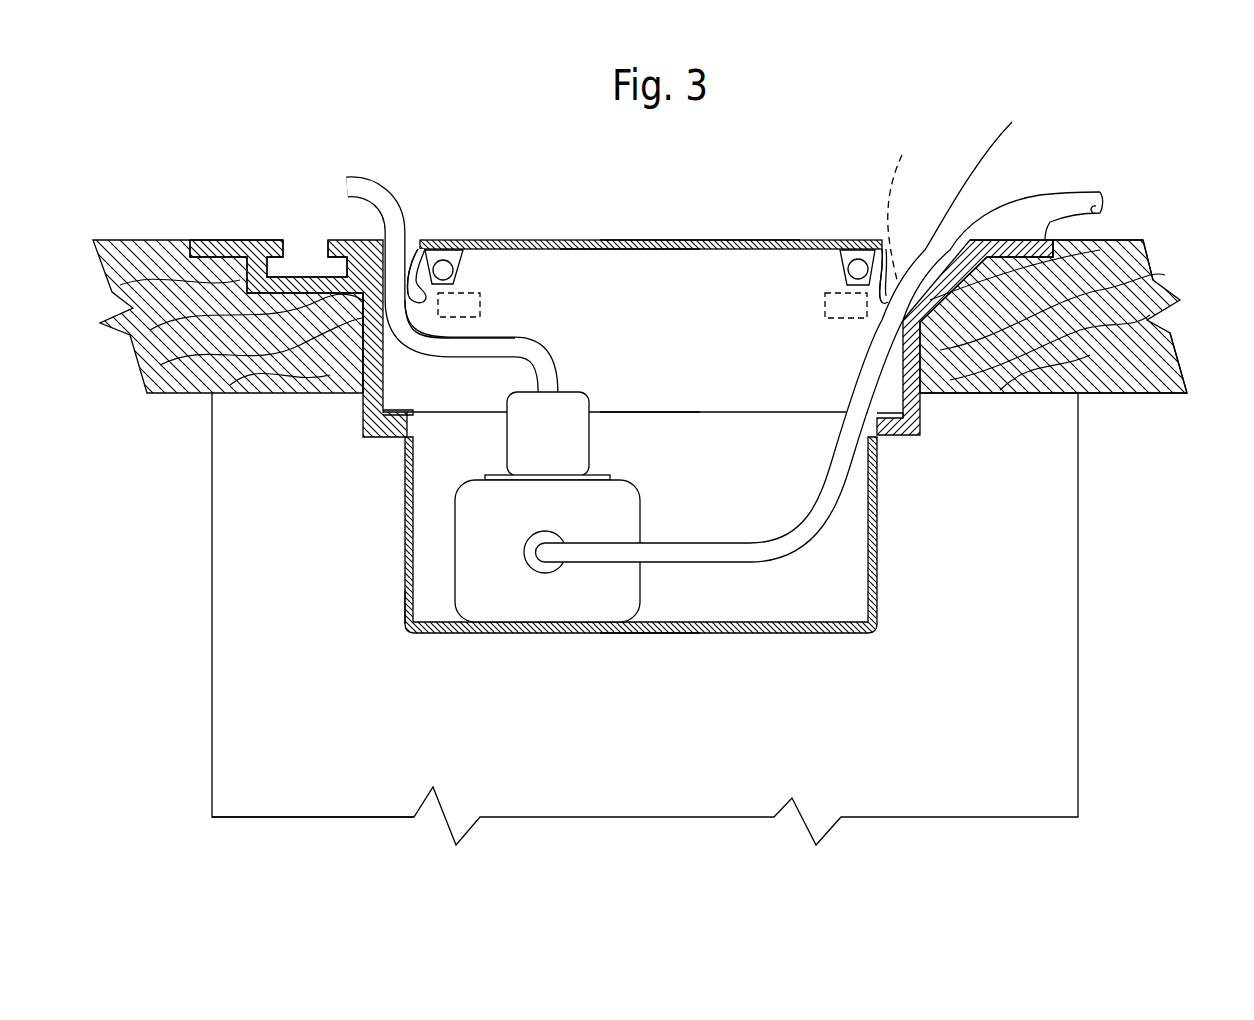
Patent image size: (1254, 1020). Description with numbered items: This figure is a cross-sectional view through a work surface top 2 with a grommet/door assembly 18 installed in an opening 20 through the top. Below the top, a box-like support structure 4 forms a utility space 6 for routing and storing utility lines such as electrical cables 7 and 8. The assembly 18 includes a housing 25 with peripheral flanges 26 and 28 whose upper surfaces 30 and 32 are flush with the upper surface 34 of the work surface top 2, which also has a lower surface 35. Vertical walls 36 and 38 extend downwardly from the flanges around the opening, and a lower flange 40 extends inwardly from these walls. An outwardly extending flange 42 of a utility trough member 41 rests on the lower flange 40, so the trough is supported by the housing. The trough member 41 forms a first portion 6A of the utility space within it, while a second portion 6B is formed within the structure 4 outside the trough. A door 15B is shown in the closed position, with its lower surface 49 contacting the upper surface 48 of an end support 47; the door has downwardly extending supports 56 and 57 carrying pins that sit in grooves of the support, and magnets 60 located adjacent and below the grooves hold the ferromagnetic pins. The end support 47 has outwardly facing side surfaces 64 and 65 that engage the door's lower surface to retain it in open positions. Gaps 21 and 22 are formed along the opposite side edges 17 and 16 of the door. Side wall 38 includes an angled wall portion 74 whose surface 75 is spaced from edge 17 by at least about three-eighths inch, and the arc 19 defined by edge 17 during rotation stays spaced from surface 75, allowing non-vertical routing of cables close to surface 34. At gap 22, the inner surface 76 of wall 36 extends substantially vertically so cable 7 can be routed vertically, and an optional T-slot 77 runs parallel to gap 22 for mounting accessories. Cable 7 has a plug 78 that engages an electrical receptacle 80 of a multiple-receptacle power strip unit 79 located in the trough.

The work surface top 2 is at (1133, 237).
The support structure 4 is at (1079, 562).
The utility space 6 is at (1005, 665).
The first portion of utility space 6A is at (738, 508).
The second portion of utility space 6B is at (738, 691).
The electrical cable 7 is at (384, 190).
The electrical cable 8 is at (987, 207).
The door 15B is at (713, 240).
The side edge 16 is at (419, 247).
The side edge 17 is at (882, 240).
The grommet/door assembly 18 is at (929, 410).
The arc 19 is at (897, 201).
The opening 20 is at (808, 212).
The gap 21 is at (901, 236).
The gap 22 is at (413, 226).
The housing 25 is at (362, 410).
The peripheral flange 26 is at (228, 240).
The peripheral flange 28 is at (1123, 237).
The upper surface 30 is at (283, 245).
The upper surface 32 is at (1020, 240).
The upper surface 34 is at (1120, 237).
The lower surface 35 is at (1173, 403).
The vertical wall 36 is at (363, 350).
The side wall 38 is at (1035, 365).
The lower flange 40 is at (405, 440).
The utility trough member 41 is at (404, 585).
The outwardly extending flange 42 is at (402, 410).
The end support 47 is at (606, 288).
The upper surface 48 is at (547, 240).
The lower surface 49 is at (638, 257).
The downwardly extending support 56 is at (843, 268).
The downwardly extending support 57 is at (462, 266).
The magnet 60 is at (481, 305).
The side surface 64 is at (421, 243).
The side surface 65 is at (923, 250).
The angled wall portion 74 is at (960, 252).
The surface 75 is at (788, 327).
The inner surface 76 is at (388, 345).
The T-slot 77 is at (310, 253).
The plug 78 is at (590, 440).
The multiple-receptacle power strip unit 79 is at (641, 572).
The electrical receptacle 80 is at (612, 478).